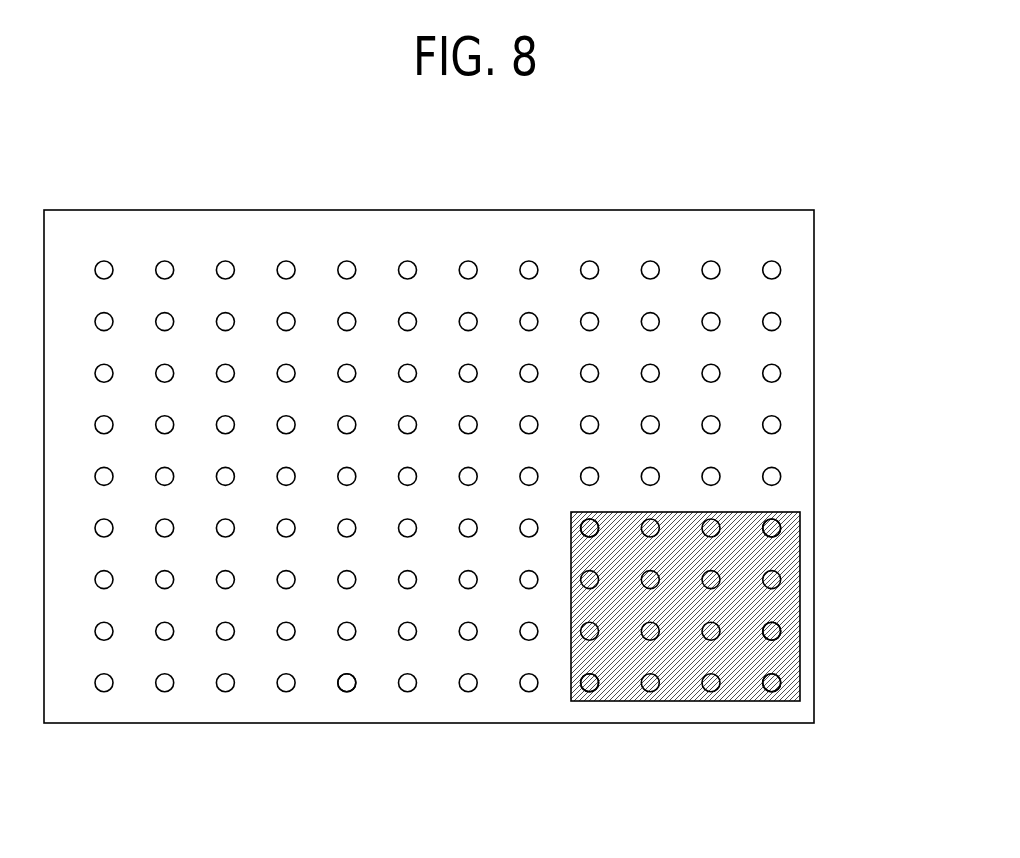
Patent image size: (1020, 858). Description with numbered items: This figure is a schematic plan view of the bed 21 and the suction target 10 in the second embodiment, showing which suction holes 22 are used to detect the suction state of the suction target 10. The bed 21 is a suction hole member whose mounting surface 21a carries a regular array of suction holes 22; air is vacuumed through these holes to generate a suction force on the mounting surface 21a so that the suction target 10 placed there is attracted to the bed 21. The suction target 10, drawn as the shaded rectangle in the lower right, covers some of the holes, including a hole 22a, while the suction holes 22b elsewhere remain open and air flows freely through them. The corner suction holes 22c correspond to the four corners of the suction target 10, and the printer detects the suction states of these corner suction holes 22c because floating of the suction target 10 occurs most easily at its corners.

The suction target 10 is at (682, 690).
The bed 21 is at (498, 210).
The mounting surface 21a is at (437, 243).
The suction holes 22 is at (492, 537).
The electrode 22a is at (776, 630).
The suction holes 22b is at (344, 691).
The corner suction holes 22c is at (590, 691).